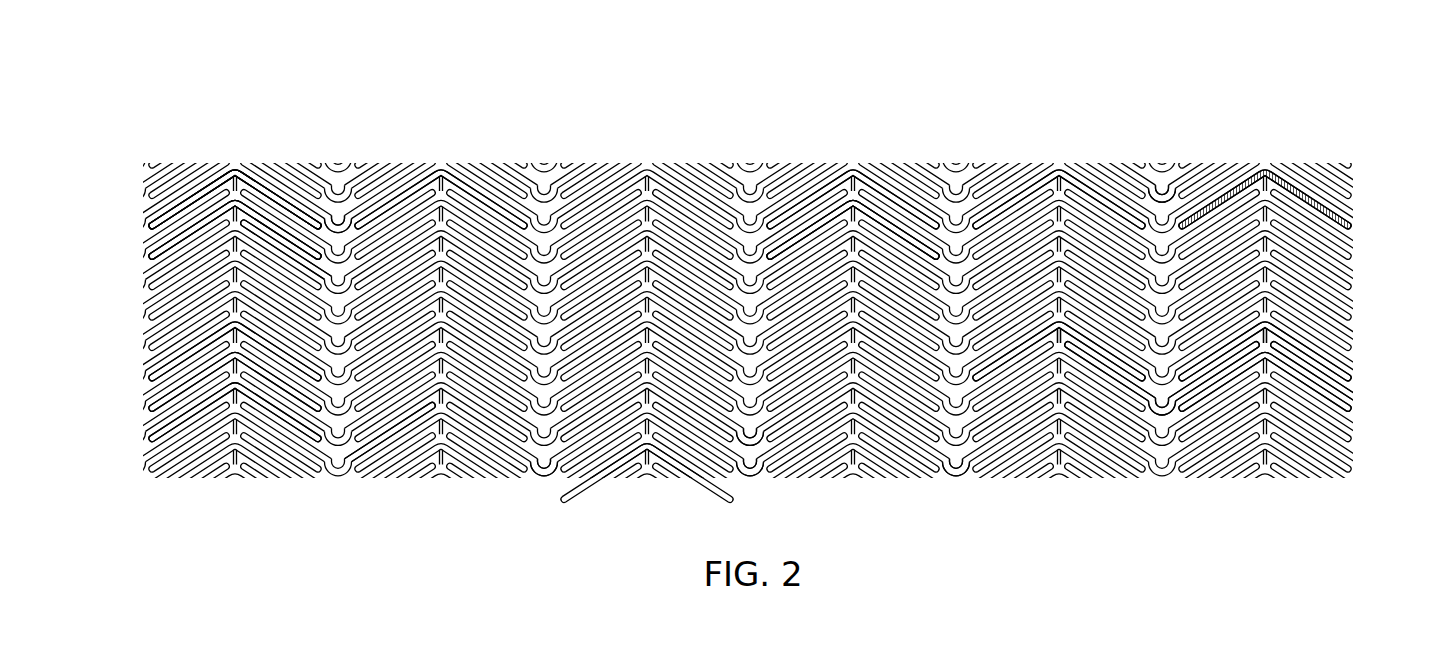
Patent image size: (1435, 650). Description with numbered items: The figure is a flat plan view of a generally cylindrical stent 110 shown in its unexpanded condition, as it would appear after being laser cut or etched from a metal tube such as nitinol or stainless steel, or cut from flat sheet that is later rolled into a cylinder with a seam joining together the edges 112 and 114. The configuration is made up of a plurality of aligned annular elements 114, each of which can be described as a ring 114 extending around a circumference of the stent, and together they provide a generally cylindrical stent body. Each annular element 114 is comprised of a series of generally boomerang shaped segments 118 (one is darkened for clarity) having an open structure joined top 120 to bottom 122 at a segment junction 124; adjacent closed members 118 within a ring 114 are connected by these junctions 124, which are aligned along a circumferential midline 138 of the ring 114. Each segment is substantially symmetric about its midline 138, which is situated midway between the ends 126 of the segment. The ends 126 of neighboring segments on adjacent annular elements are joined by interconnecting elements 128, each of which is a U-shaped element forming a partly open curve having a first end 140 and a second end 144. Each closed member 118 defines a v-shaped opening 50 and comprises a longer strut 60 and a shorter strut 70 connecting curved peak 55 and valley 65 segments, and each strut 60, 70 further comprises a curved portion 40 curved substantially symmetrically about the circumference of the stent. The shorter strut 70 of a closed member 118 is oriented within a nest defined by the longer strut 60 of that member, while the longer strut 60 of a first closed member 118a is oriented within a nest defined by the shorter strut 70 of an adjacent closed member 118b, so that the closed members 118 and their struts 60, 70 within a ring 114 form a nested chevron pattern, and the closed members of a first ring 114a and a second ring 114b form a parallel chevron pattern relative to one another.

The curved portion 40 is at (200, 205).
The v-shaped opening 50 is at (238, 208).
The curved peak segment 55 is at (150, 228).
The longer strut 60 is at (160, 208).
The curved valley segment 65 is at (322, 215).
The shorter strut 70 is at (152, 250).
The stent 110 is at (644, 155).
The edge 112 is at (456, 160).
The annular element 114 is at (453, 470).
The first ring 114a is at (390, 175).
The second ring 114b is at (292, 160).
The boomerang shaped segment 118 is at (1108, 185).
The first closed member 118a is at (145, 410).
The adjacent closed member 118b is at (145, 370).
The top 120 is at (865, 205).
The bottom 122 is at (817, 190).
The segment junction 124 is at (823, 200).
The end 126 is at (550, 462).
The interconnecting element 128 is at (1148, 165).
The midline 138 is at (634, 462).
The first end 140 is at (305, 425).
The second end 144 is at (345, 432).